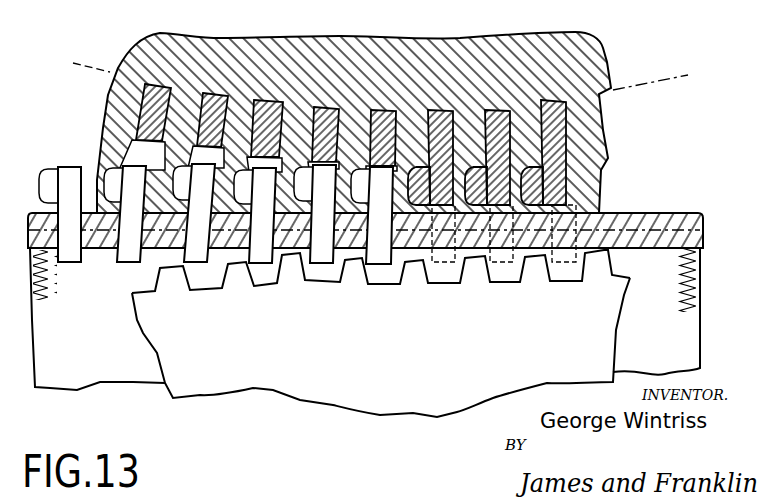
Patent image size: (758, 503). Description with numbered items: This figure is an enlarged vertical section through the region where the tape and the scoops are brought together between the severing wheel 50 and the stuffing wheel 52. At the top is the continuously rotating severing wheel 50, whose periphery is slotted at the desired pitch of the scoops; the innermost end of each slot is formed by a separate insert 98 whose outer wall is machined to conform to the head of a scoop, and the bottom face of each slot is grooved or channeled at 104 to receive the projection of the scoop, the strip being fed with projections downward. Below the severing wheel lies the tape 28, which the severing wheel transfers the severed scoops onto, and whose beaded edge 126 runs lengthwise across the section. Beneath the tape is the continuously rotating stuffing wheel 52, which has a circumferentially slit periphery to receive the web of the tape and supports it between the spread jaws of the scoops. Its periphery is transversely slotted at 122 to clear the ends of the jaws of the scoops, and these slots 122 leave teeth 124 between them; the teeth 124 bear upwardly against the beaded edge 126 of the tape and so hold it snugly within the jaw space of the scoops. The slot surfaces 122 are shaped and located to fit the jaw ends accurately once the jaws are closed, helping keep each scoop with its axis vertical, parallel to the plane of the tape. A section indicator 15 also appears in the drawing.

The severing wheel 50 is at (157, 34).
The insert 98 is at (125, 71).
The groove of slot bottom face 104 is at (130, 163).
The section line 15 is at (490, 114).
The beaded edge of the tape 126 is at (647, 213).
The tape 28 is at (700, 282).
The teeth 124 is at (170, 268).
The slots 122 is at (270, 272).
The stuffing wheel 52 is at (270, 383).